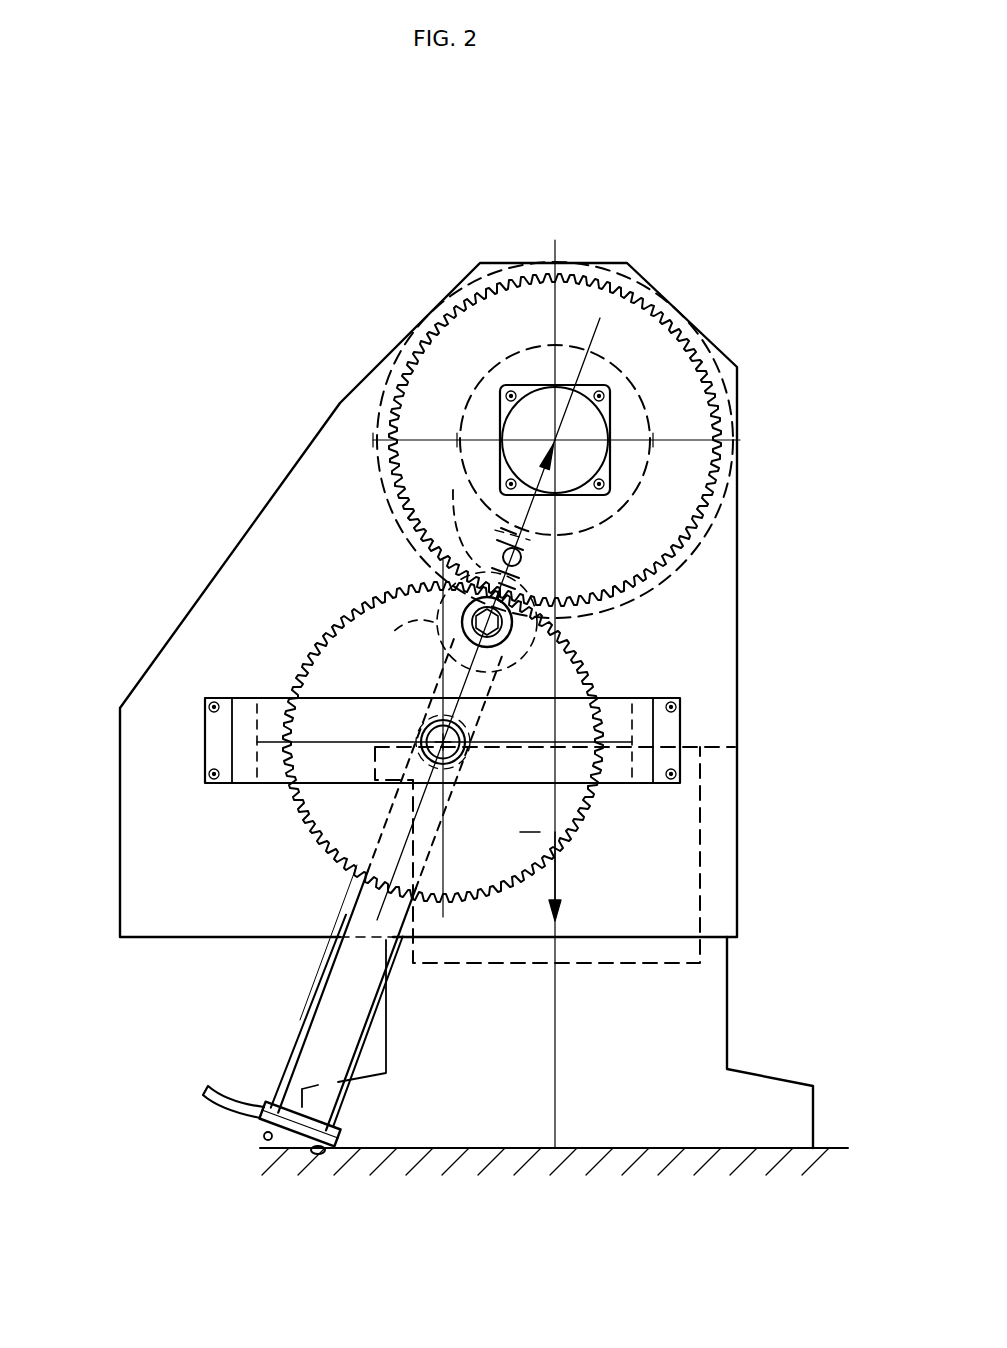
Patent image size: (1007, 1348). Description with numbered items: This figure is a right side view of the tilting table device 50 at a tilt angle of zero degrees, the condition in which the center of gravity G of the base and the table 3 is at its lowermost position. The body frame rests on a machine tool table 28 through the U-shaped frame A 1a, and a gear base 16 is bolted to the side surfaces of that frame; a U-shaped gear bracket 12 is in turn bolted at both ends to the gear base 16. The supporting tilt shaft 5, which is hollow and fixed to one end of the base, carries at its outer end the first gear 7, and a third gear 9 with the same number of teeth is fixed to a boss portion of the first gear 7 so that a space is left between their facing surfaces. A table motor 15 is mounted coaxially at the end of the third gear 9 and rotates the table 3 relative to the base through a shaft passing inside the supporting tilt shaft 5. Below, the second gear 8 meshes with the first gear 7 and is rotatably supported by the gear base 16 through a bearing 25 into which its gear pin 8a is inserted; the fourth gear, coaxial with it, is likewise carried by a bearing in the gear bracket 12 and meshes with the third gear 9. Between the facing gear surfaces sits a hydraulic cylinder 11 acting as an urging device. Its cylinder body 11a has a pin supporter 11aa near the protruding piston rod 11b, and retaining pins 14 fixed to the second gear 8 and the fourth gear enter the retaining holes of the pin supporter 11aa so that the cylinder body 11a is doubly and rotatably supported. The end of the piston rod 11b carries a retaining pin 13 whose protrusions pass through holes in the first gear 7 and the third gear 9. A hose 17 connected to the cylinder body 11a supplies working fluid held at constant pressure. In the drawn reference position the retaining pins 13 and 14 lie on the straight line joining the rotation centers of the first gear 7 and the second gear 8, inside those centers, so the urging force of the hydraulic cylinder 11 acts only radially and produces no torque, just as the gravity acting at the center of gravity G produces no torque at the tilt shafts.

The tilting table device 50 is at (522, 205).
The supporting tilt shaft 5 is at (386, 357).
The first gear 7 is at (680, 320).
The third gear 9 is at (555, 440).
The table motor 15 is at (578, 455).
The piston rod 11b is at (477, 526).
The retaining pin 13 is at (532, 552).
The second gear 8 is at (600, 652).
The retaining pin 14 is at (505, 634).
The pin supporter 11aa is at (397, 636).
The bearing 25 is at (420, 722).
The gear bracket 12 is at (596, 762).
The gear pin 8a is at (466, 770).
The center of gravity G is at (576, 838).
The table 3 is at (700, 868).
The gear base 16 is at (120, 890).
The frame A 1a is at (690, 1020).
The cylinder body 11a is at (335, 1032).
The hydraulic cylinder 11 is at (285, 1082).
The hose 17 is at (205, 1105).
The machine tool table 28 is at (278, 1175).